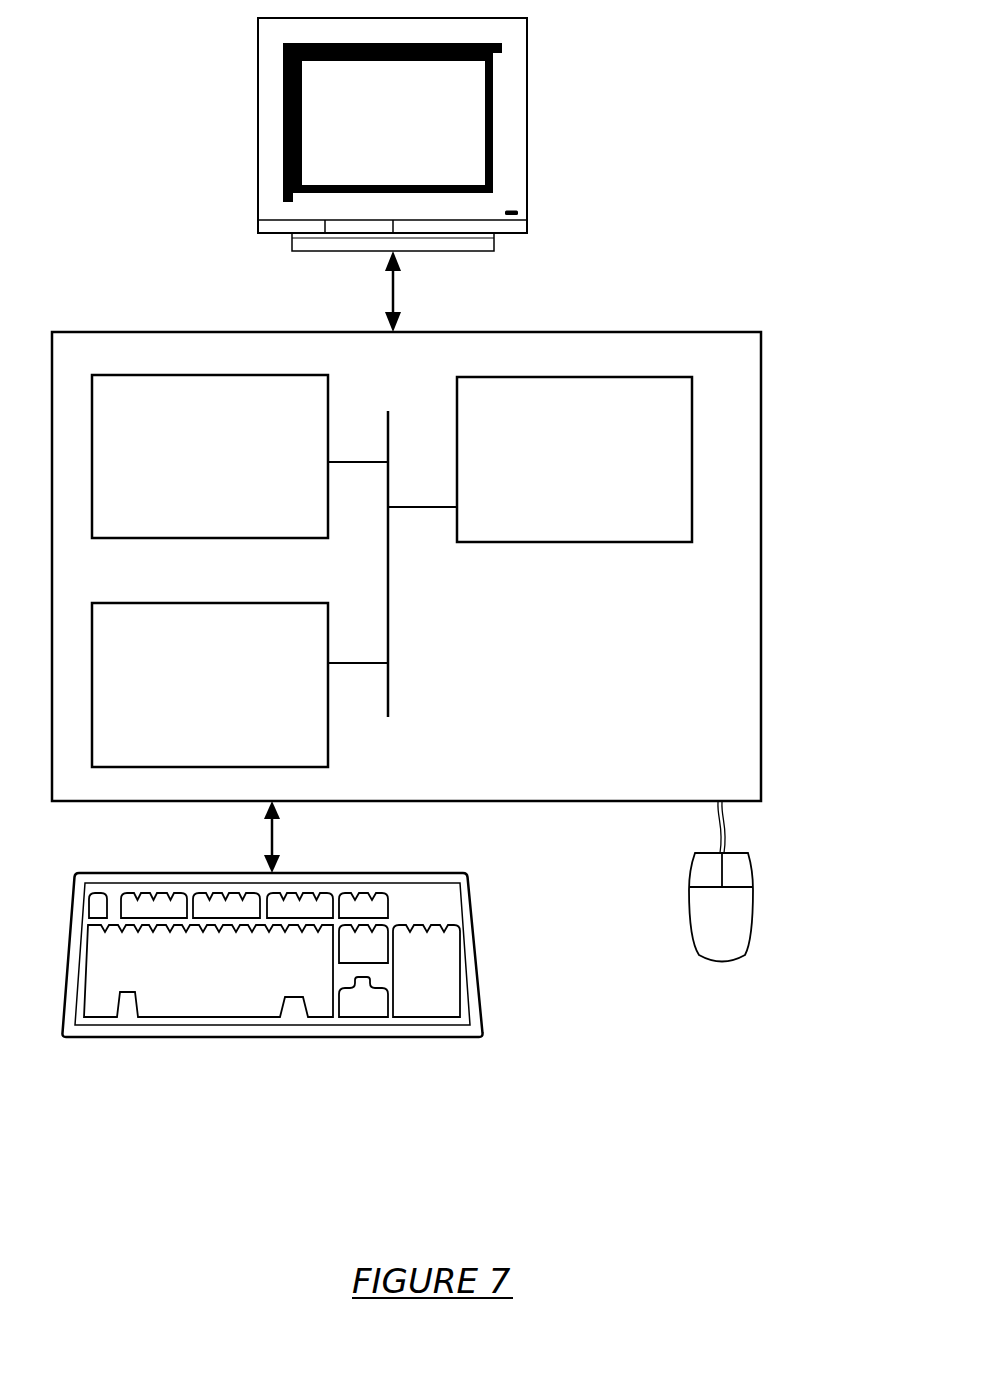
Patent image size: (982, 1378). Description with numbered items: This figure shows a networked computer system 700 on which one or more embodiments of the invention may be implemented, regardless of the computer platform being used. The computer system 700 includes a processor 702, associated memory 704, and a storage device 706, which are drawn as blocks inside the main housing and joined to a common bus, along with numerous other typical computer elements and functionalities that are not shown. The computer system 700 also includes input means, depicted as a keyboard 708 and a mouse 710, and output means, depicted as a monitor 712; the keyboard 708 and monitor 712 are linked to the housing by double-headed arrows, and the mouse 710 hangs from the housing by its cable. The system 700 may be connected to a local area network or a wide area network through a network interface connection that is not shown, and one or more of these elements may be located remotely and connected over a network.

The networked computer system 700 is at (781, 184).
The processor 702 is at (566, 469).
The memory 704 is at (184, 469).
The storage device 706 is at (181, 699).
The keyboard 708 is at (174, 996).
The mouse 710 is at (696, 929).
The monitor 712 is at (366, 139).